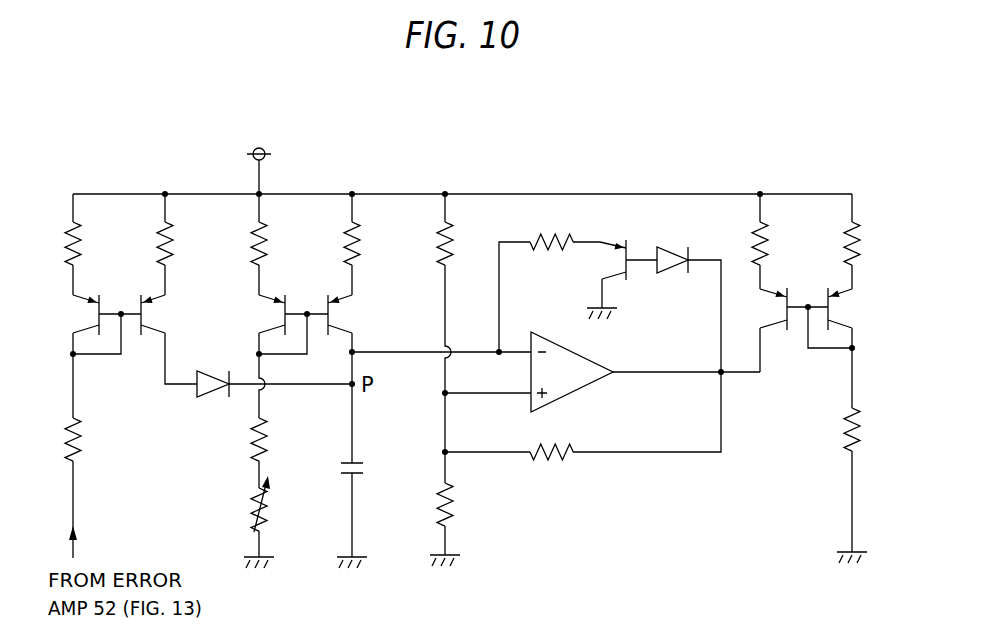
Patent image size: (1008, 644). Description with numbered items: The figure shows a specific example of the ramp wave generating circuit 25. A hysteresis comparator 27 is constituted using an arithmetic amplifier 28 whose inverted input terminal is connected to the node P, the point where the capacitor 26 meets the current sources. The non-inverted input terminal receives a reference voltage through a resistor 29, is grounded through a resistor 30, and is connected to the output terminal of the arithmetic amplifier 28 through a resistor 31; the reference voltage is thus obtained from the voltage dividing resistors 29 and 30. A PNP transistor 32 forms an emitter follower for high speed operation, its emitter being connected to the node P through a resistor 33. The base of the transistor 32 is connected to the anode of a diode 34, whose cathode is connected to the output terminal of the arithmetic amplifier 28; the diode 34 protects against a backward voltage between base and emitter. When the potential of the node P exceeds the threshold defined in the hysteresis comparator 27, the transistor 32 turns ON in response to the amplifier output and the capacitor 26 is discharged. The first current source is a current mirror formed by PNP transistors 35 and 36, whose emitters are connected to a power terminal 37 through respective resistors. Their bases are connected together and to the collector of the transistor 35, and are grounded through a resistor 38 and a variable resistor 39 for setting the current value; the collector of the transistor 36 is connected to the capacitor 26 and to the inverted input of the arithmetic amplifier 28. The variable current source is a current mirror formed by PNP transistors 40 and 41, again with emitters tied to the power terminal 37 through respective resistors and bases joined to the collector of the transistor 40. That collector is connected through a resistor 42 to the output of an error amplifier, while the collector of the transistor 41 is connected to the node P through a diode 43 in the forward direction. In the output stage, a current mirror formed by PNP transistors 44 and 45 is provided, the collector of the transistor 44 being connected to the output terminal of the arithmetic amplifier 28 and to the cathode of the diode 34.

The ramp wave generating circuit 25 is at (163, 129).
The capacitor 26 is at (365, 462).
The hysteresis comparator 27 is at (664, 482).
The arithmetic amplifier 28 is at (600, 360).
The resistor 29 is at (455, 237).
The resistor 30 is at (458, 500).
The resistor 31 is at (565, 448).
The PNP transistor 32 is at (630, 244).
The resistor 33 is at (562, 240).
The diode 34 is at (672, 243).
The PNP transistor 35 is at (275, 327).
The PNP transistor 36 is at (343, 325).
The power terminal 37 is at (263, 148).
The resistor 38 is at (268, 427).
The variable resistor 39 is at (258, 491).
The PNP transistor 40 is at (90, 328).
The PNP transistor 41 is at (160, 295).
The resistor 42 is at (83, 428).
The diode 43 is at (207, 370).
The PNP transistor 44 is at (772, 288).
The PNP transistor 45 is at (843, 317).